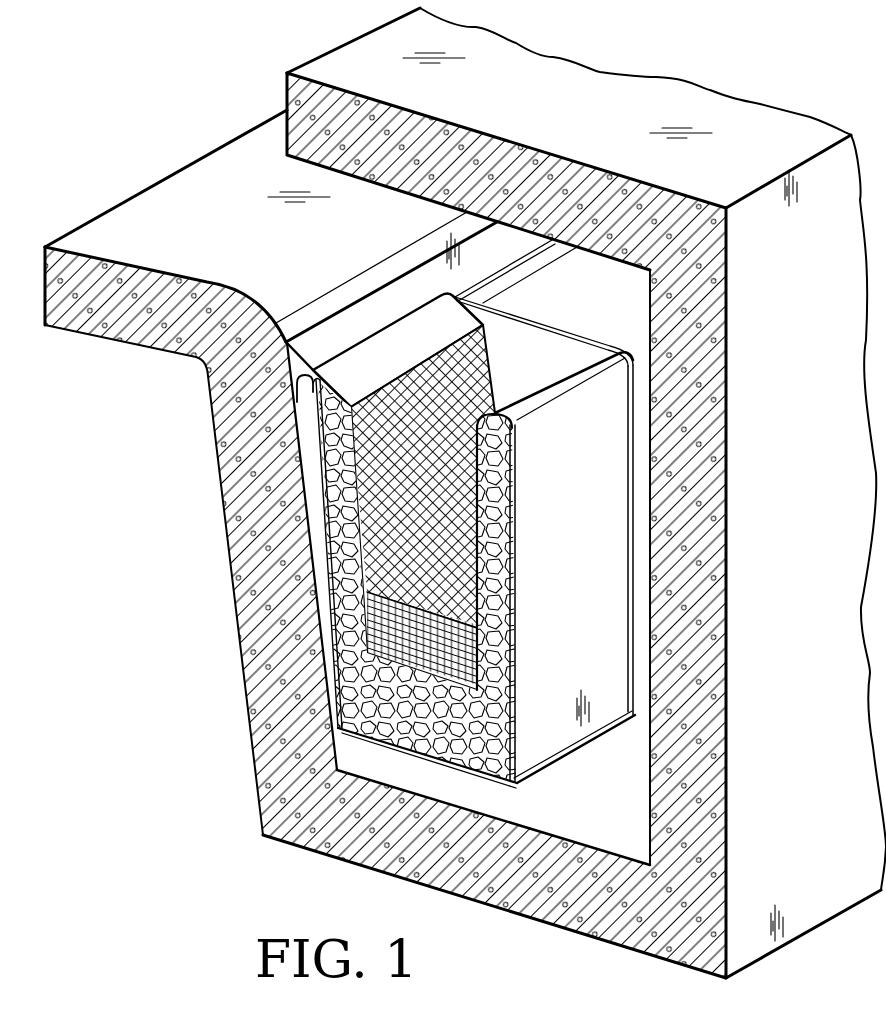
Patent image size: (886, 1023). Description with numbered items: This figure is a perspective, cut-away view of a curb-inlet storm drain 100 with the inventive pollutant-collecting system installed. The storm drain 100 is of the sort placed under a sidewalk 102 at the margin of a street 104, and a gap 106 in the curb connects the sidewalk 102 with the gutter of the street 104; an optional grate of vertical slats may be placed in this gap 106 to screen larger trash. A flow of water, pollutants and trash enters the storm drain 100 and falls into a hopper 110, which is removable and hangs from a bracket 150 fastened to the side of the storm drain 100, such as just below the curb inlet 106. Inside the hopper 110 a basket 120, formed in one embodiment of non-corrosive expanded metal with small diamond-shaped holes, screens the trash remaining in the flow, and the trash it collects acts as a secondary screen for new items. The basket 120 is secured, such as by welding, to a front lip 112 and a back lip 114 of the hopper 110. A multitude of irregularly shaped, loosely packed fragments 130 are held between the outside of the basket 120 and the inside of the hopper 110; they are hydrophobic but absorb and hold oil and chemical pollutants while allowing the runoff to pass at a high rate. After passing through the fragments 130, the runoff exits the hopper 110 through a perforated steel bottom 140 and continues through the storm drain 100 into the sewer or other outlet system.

The curb-inlet storm drain 100 is at (781, 87).
The sidewalk 102 is at (526, 107).
The street 104 is at (258, 190).
The gap in the curb 106 is at (283, 248).
The hopper 110 is at (601, 530).
The front lip 112 is at (457, 297).
The back lip 114 is at (586, 360).
The basket 120 is at (492, 371).
The fragments 130 is at (514, 658).
The perforated steel bottom 140 is at (481, 780).
The bracket 150 is at (328, 292).